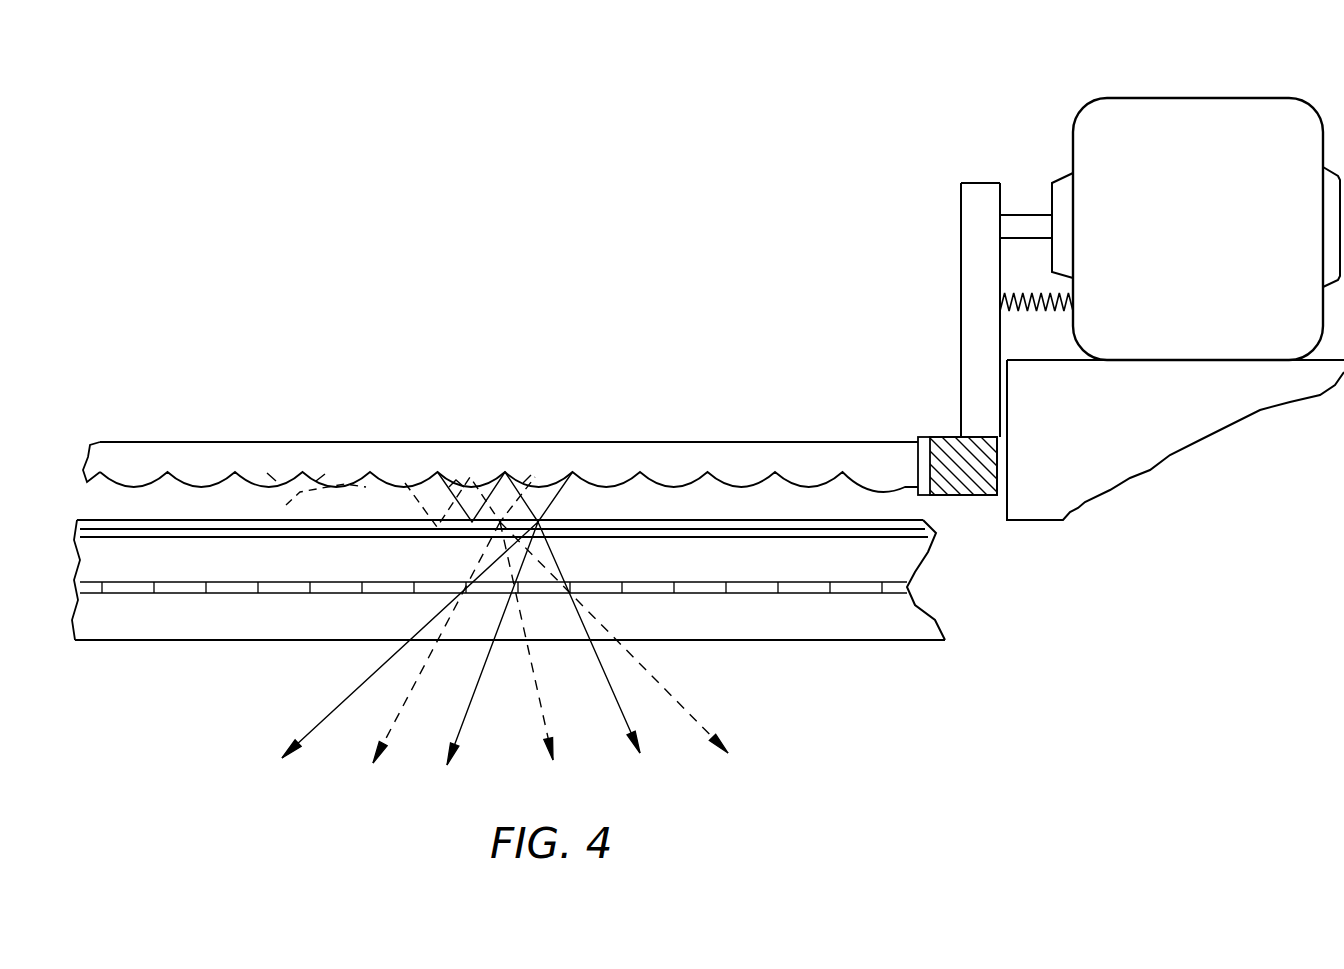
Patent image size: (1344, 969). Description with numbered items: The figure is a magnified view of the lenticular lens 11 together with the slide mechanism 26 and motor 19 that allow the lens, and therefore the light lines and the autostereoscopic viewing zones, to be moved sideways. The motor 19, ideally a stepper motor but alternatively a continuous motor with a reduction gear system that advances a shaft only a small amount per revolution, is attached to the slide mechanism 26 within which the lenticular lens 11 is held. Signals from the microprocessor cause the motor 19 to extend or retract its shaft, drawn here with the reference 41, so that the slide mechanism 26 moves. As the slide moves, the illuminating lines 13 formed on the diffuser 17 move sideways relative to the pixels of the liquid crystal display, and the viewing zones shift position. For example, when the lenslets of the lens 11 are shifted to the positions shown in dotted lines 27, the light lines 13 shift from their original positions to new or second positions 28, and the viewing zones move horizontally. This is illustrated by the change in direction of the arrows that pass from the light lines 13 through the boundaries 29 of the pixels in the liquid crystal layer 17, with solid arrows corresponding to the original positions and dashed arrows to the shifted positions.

The lenticular lens 11 is at (100, 442).
The illuminating lines 13 is at (548, 528).
The diffuser 17 is at (85, 520).
The motor 19 is at (1133, 98).
The slide mechanism 26 is at (945, 435).
The dotted lines (shifted lenslet positions) 27 is at (393, 498).
The second positions of the light lines 28 is at (440, 518).
The pixel boundaries 29 is at (467, 588).
The motor shaft 41 is at (1023, 222).